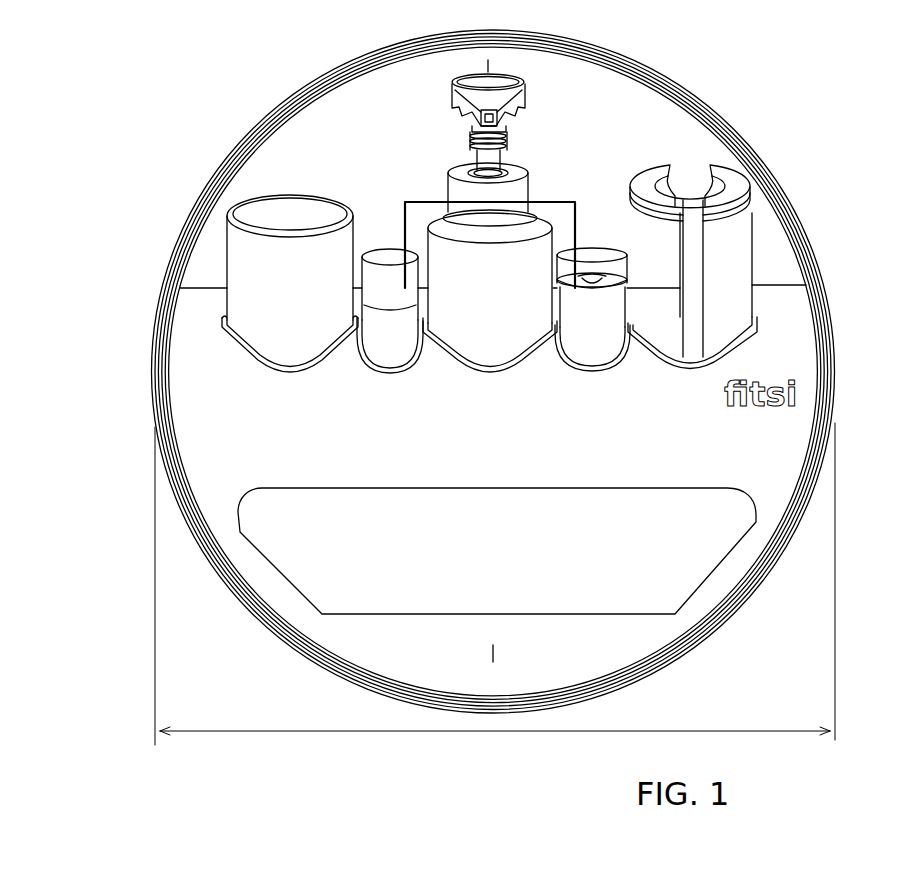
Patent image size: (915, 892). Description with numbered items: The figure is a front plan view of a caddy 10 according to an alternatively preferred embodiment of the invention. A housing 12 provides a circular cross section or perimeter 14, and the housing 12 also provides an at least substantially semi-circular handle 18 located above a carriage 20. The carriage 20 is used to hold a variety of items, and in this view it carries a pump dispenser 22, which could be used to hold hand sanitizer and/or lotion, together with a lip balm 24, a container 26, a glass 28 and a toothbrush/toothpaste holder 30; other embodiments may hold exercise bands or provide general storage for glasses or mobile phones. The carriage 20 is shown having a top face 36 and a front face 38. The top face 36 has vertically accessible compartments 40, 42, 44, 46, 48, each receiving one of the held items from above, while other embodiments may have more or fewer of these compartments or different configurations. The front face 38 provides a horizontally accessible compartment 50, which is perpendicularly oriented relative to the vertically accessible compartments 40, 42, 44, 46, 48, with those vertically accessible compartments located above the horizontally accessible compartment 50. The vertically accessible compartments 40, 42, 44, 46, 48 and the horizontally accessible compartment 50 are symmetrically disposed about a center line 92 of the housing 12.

The caddy 10 is at (735, 108).
The housing 12 is at (660, 80).
The circular cross section or perimeter 14 is at (828, 346).
The substantially semi-circular handle 18 is at (352, 78).
The carriage 20 is at (790, 312).
The pump dispenser 22 is at (500, 342).
The lip balm 24 is at (386, 346).
The container 26 is at (600, 332).
The glass 28 is at (286, 346).
The toothbrush/toothpaste holder 30 is at (735, 240).
The top face 36 is at (216, 313).
The front face 38 is at (264, 470).
The vertically accessible compartment 40 is at (320, 350).
The vertically accessible compartment 42 is at (397, 352).
The vertically accessible compartment 44 is at (487, 356).
The vertically accessible compartment 46 is at (590, 356).
The vertically accessible compartment 48 is at (762, 320).
The horizontally accessible compartment 50 is at (710, 556).
The center line 92 is at (490, 433).